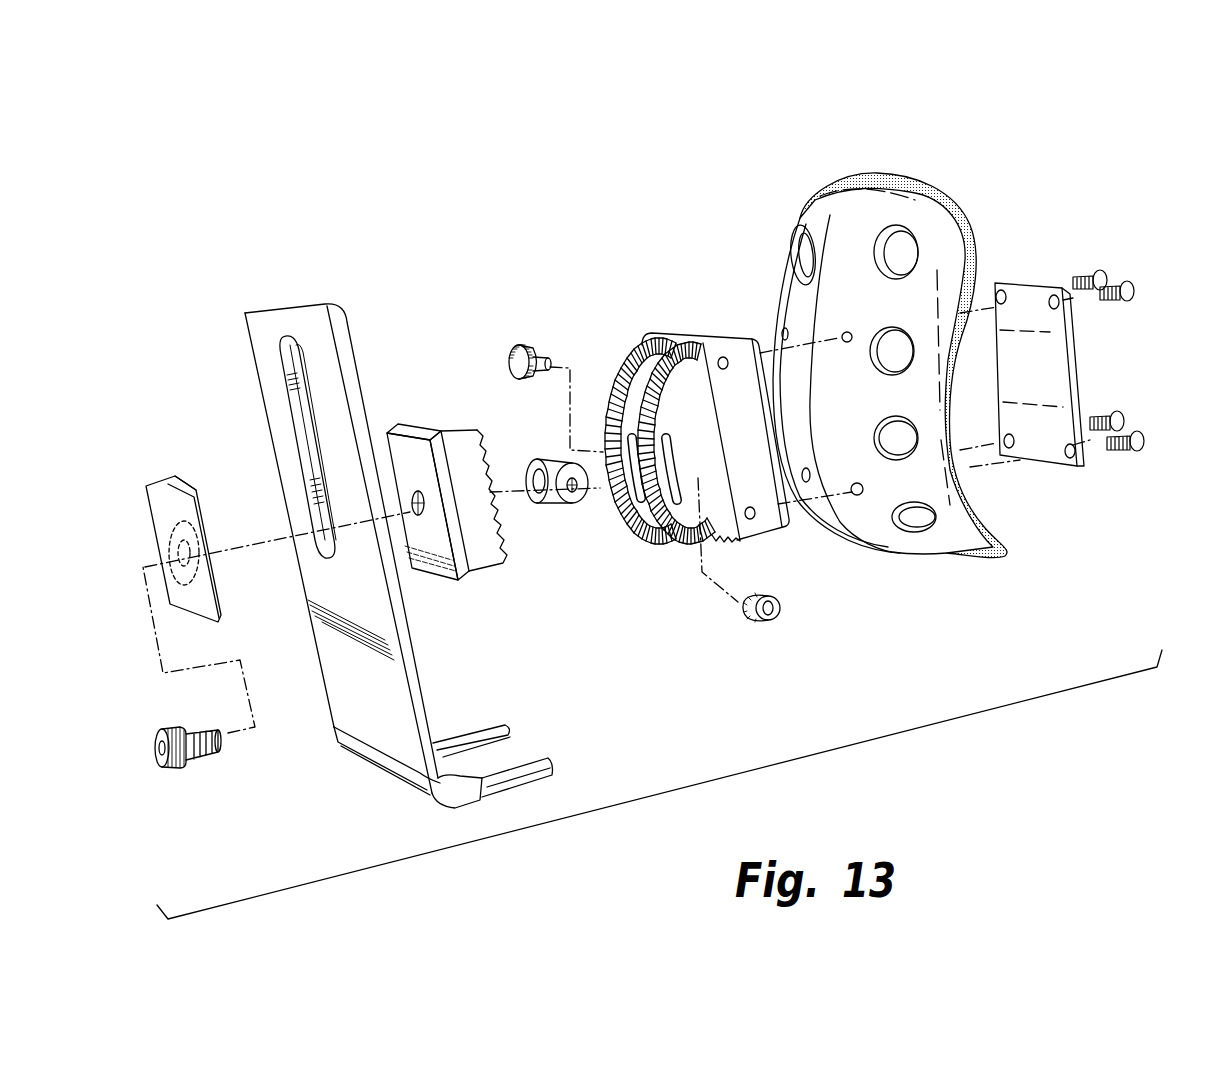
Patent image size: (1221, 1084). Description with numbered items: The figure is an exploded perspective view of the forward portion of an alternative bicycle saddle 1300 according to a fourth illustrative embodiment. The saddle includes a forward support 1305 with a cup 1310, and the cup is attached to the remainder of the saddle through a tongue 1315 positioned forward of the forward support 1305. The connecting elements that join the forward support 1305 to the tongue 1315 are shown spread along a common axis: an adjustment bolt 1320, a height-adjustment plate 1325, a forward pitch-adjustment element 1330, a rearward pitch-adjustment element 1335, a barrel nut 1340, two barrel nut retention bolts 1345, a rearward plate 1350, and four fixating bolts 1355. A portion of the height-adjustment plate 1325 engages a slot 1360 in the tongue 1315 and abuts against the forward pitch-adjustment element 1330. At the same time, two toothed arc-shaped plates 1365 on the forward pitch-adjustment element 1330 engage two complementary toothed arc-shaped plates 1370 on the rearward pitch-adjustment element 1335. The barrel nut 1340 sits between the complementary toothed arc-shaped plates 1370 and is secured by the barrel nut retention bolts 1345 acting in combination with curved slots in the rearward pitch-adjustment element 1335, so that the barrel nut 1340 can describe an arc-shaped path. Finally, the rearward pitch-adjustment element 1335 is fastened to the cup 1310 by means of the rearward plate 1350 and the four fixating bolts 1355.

The alternative bicycle saddle 1300 is at (968, 162).
The forward support 1305 is at (609, 302).
The cup 1310 is at (890, 550).
The tongue 1315 is at (230, 385).
The adjustment bolt 1320 is at (193, 760).
The height-adjustment plate 1325 is at (228, 583).
The forward pitch-adjustment element 1330 is at (465, 604).
The rearward pitch-adjustment element 1335 is at (690, 318).
The barrel nut 1340 is at (548, 502).
The barrel nut retention bolts 1345 is at (523, 380).
The rearward plate 1350 is at (1057, 466).
The fixating bolts 1355 is at (1113, 452).
The slot 1360 is at (305, 490).
The toothed arc-shaped plates 1365 is at (412, 424).
The complementary toothed arc-shaped plates 1370 is at (632, 532).